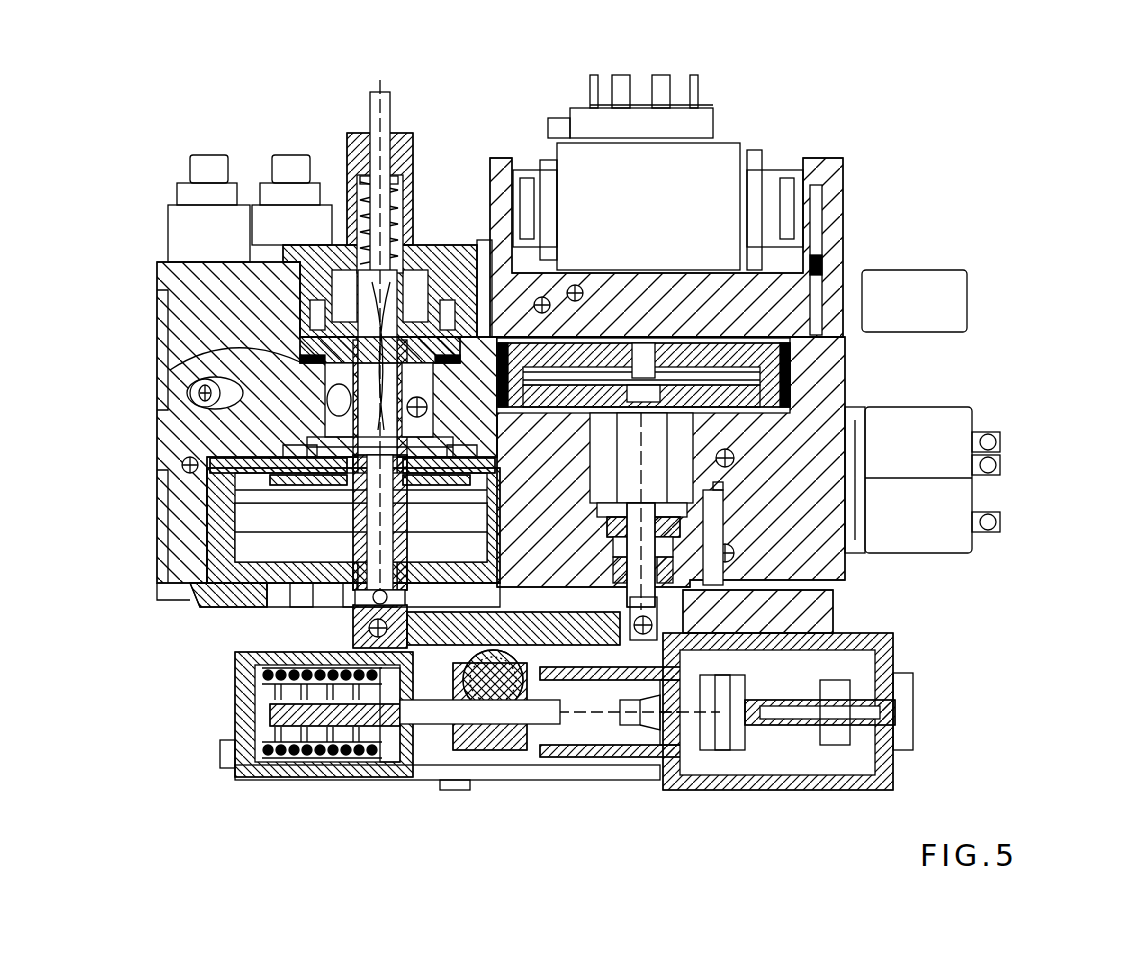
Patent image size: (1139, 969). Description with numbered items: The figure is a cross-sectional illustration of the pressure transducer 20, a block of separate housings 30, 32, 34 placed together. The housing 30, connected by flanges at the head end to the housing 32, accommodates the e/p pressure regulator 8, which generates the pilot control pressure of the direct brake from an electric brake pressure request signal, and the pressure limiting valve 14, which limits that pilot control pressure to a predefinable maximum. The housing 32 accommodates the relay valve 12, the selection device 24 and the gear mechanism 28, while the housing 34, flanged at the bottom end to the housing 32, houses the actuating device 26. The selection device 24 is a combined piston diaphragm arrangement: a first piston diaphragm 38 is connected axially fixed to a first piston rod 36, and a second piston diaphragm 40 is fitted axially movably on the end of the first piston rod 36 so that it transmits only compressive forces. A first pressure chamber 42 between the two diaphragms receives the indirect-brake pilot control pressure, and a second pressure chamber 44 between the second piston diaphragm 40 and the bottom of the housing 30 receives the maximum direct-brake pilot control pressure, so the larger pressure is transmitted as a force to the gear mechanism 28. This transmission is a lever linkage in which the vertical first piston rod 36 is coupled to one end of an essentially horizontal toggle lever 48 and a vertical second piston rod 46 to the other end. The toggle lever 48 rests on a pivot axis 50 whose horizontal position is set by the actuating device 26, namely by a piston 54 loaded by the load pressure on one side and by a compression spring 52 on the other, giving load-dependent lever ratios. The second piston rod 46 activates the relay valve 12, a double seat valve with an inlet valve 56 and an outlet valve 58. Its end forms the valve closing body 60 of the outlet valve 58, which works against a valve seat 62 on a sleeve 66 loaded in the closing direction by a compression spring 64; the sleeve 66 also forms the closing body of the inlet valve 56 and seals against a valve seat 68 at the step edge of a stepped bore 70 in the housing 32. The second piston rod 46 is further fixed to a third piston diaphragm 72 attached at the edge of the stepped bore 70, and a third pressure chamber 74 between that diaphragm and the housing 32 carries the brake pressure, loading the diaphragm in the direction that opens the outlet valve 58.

The e/p pressure regulator 8 is at (725, 163).
The relay valve 12 is at (160, 275).
The pressure limiting valve 14 is at (548, 160).
The pressure transducer 20 is at (900, 120).
The selection device 24 is at (868, 348).
The actuating device 26 is at (350, 805).
The gear mechanism 28 is at (845, 578).
The housing 30 is at (845, 233).
The housing 32 is at (232, 268).
The housing 34 is at (637, 785).
The first piston rod 36 is at (845, 437).
The first piston diaphragm 38 is at (845, 383).
The second piston diaphragm 40 is at (845, 360).
The first pressure chamber 42 is at (495, 240).
The second pressure chamber 44 is at (720, 335).
The second piston rod 46 is at (325, 377).
The toggle lever 48 is at (552, 690).
The pivot axis 50 is at (445, 662).
The compression spring 52 is at (260, 775).
The piston 54 is at (737, 745).
The inlet valve 56 is at (340, 485).
The outlet valve 58 is at (330, 530).
The valve closing body 60 is at (265, 350).
The valve seat 62 is at (438, 245).
The compression spring 64 is at (348, 185).
The sleeve 66 is at (300, 260).
The valve seat 68 is at (455, 265).
The stepped bore 70 is at (217, 273).
The third piston diaphragm 72 is at (183, 447).
The third pressure chamber 74 is at (175, 373).